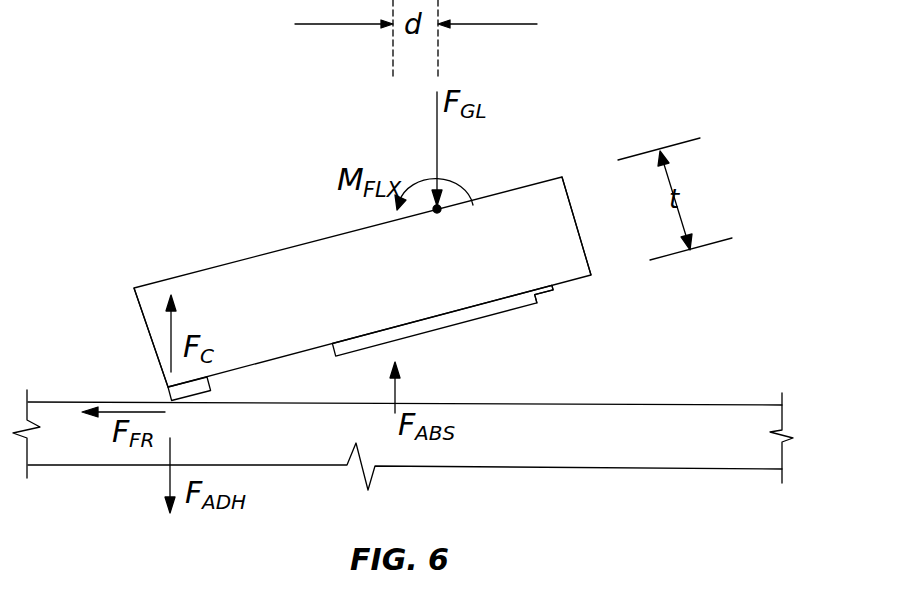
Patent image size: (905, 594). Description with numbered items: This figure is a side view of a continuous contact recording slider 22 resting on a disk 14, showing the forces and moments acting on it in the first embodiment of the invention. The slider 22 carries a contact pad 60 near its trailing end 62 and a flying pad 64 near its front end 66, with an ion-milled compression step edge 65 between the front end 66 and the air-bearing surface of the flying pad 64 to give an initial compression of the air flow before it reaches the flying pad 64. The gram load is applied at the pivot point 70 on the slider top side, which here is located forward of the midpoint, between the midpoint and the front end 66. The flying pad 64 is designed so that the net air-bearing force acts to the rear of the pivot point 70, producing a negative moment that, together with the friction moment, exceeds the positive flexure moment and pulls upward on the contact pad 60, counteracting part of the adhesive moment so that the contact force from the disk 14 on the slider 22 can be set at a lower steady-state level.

The disk 14 is at (684, 418).
The slider 22 is at (527, 195).
The contact pad 60 is at (205, 396).
The trailing end 62 is at (143, 322).
The flying pad 64 is at (530, 306).
The compression step edge 65 is at (538, 293).
The front end 66 is at (575, 210).
The pivot point 70 is at (471, 203).